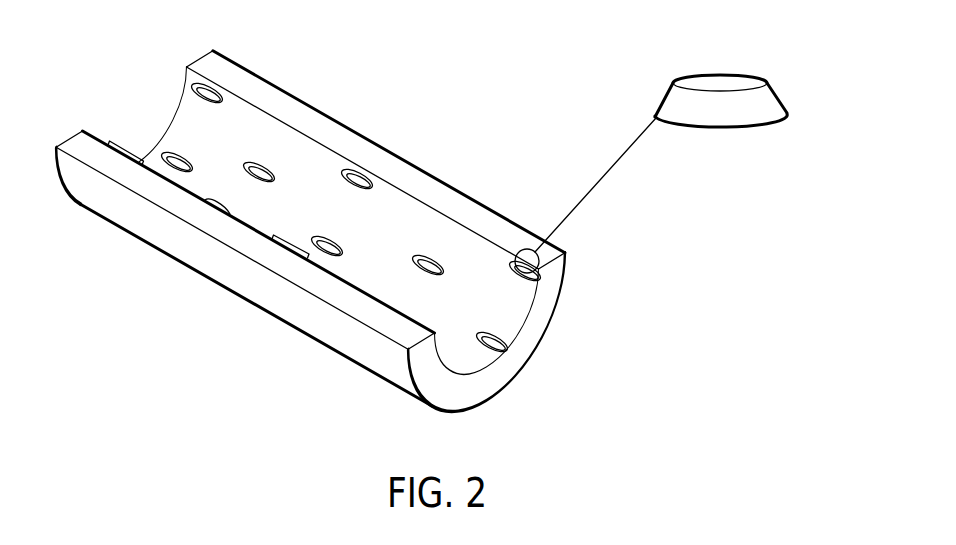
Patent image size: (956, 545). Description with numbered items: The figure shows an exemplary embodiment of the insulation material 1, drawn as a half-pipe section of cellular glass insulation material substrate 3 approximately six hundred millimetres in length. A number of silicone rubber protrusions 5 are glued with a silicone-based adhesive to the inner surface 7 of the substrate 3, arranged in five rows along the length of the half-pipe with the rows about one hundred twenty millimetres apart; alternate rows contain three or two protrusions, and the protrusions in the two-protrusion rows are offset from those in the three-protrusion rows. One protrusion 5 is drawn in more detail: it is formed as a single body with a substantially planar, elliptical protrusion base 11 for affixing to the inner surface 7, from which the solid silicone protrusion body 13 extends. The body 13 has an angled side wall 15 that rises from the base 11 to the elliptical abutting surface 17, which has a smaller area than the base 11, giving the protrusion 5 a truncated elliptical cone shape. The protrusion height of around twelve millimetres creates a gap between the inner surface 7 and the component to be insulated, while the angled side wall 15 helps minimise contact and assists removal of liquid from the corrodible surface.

The insulation material 1 is at (356, 250).
The cellular glass insulation material substrate 3 is at (517, 352).
The silicone rubber protrusion 5 is at (363, 177).
The inner surface 7 is at (410, 213).
The protrusion base 11 is at (741, 104).
The protrusion body 13 is at (763, 110).
The side wall 15 is at (782, 98).
The abutting surface 17 is at (692, 83).